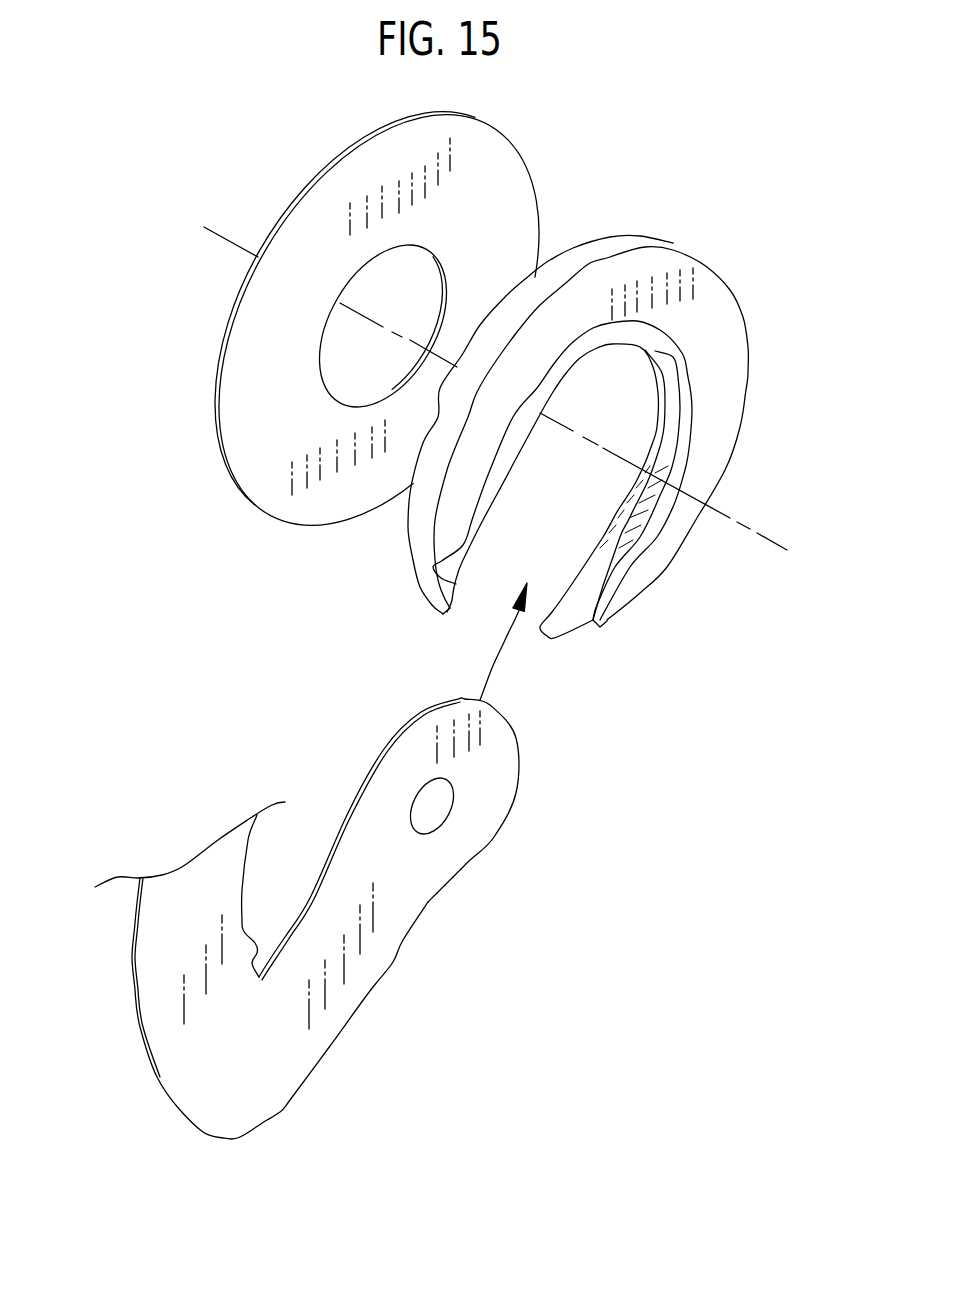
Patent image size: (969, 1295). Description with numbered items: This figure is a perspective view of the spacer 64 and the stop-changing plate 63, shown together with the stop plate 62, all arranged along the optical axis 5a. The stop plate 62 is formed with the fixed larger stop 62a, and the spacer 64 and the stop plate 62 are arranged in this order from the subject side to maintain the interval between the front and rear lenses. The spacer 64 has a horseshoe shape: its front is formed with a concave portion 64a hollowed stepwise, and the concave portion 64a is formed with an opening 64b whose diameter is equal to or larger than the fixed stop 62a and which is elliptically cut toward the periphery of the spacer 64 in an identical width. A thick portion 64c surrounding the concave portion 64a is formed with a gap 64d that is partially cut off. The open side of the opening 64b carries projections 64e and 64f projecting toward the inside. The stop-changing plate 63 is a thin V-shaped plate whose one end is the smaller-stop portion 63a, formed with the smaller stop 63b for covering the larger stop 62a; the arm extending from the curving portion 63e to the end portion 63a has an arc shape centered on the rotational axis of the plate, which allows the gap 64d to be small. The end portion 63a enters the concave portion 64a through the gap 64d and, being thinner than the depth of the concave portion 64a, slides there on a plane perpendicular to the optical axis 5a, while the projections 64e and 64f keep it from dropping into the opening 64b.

The optical axis 5a is at (770, 537).
The stop plate 62 is at (270, 524).
The fixed larger stop 62a is at (380, 258).
The stop-changing plate 63 is at (166, 1086).
The smaller-stop portion 63a is at (494, 763).
The smaller stop 63b is at (436, 811).
The curving portion 63e is at (285, 1074).
The spacer 64 is at (631, 231).
The concave portion 64a is at (673, 380).
The opening 64b is at (573, 367).
The thick portion 64c is at (707, 330).
The gap 64d is at (593, 625).
The projection 64e is at (538, 630).
The projection 64f is at (450, 613).